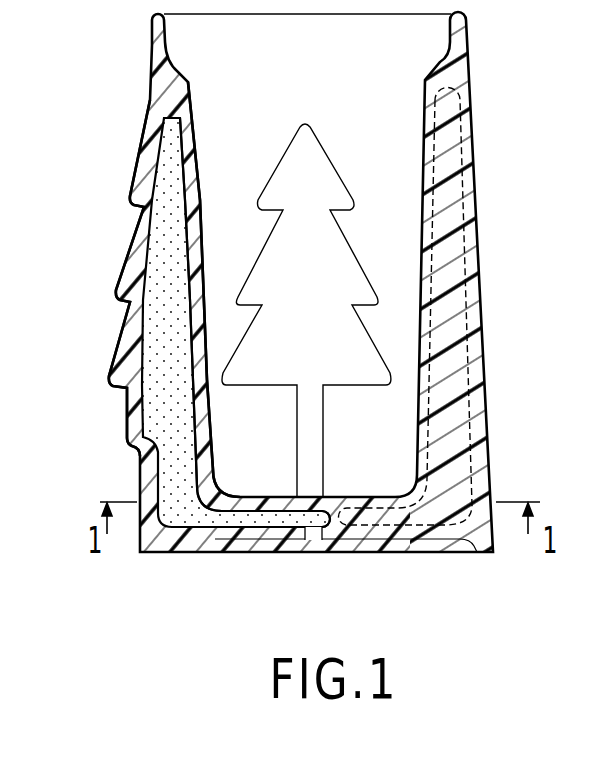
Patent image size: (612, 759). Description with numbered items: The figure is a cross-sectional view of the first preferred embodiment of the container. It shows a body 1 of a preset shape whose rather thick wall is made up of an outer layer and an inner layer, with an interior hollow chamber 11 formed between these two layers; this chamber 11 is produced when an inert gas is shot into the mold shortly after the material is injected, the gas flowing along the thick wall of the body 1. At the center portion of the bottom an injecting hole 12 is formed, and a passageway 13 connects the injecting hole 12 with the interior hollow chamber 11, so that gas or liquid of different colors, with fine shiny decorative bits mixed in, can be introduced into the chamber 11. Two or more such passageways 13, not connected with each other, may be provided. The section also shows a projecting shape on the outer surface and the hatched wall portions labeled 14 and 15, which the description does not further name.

The body 1 is at (108, 236).
The interior hollow chamber 11 is at (160, 303).
The injecting hole 12 is at (313, 530).
The passageway 13 is at (238, 518).
The inner wall of insert 14 is at (200, 388).
The serrated outer wall 15 is at (146, 165).